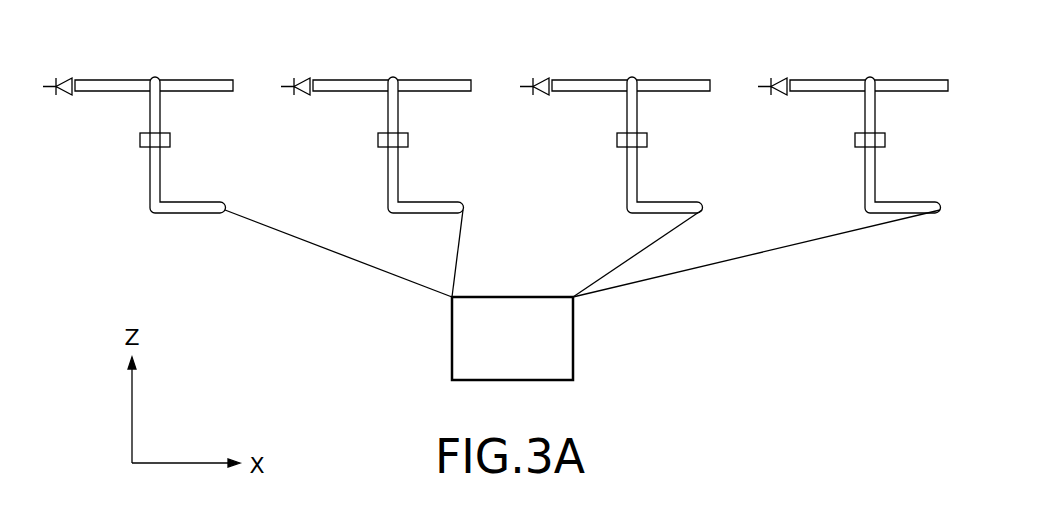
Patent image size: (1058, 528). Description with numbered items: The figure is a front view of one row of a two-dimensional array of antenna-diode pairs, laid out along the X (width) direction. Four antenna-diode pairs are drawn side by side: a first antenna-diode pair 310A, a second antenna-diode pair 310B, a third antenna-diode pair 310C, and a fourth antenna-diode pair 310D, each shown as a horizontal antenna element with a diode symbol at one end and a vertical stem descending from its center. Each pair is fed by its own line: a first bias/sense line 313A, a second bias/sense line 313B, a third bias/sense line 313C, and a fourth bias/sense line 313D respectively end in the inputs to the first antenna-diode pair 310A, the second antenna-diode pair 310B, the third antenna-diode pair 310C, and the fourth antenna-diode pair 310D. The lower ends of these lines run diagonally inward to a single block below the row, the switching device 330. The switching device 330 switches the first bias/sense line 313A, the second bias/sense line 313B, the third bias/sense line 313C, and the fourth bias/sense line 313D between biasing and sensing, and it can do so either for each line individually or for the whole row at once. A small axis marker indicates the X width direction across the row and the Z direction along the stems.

The first antenna-diode pair 310A is at (154, 77).
The second antenna-diode pair 310B is at (392, 77).
The third antenna-diode pair 310C is at (631, 77).
The fourth antenna-diode pair 310D is at (869, 77).
The first bias/sense line 313A is at (290, 187).
The second bias/sense line 313B is at (415, 187).
The third bias/sense line 313C is at (638, 187).
The fourth bias/sense line 313D is at (766, 187).
The switching device 330 is at (493, 350).